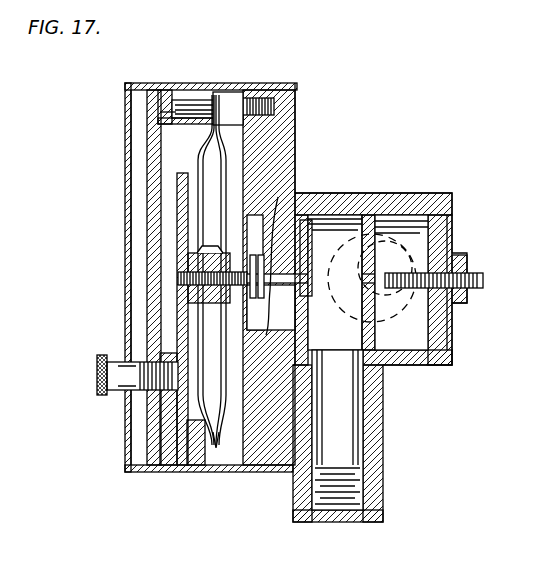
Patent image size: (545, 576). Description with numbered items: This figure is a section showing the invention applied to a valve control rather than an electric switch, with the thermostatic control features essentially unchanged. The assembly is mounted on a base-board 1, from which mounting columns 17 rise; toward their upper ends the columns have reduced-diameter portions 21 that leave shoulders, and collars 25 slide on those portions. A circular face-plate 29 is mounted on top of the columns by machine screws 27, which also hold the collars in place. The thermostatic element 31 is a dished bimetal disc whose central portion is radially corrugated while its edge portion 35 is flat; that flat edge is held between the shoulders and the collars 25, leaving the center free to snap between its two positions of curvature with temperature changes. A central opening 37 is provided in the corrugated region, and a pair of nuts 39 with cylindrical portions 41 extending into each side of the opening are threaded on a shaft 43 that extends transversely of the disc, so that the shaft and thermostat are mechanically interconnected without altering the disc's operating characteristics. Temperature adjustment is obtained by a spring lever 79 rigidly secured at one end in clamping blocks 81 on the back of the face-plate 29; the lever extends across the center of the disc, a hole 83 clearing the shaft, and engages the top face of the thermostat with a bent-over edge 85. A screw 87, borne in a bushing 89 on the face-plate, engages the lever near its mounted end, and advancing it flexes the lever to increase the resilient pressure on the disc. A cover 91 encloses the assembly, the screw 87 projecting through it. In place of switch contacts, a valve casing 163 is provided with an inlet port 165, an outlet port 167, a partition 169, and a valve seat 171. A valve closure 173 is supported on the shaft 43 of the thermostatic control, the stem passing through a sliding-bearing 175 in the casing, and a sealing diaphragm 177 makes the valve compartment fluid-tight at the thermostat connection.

The base-board 1 is at (290, 142).
The mounting columns 17 is at (224, 98).
The reduced-diameter portions 21 is at (190, 106).
The collars 25 is at (168, 90).
The machine screws 27 is at (160, 114).
The face-plate 29 is at (148, 170).
The thermostatic element 31 is at (289, 115).
The edge portion 35 is at (258, 100).
The central opening 37 is at (262, 305).
The nuts 39 is at (212, 262).
The cylindrical portions 41 is at (190, 305).
The shaft 43 is at (358, 290).
The spring lever 79 is at (177, 338).
The clamping blocks 81 is at (195, 460).
The hole 83 is at (186, 258).
The bent-over edge 85 is at (182, 175).
The screw 87 is at (115, 398).
The bushing 89 is at (135, 396).
The cover 91 is at (128, 195).
The valve casing 163 is at (380, 196).
The inlet port 165 is at (440, 270).
The outlet port 167 is at (338, 522).
The partition 169 is at (388, 366).
The valve seat 171 is at (384, 312).
The valve closure 173 is at (337, 418).
The sliding-bearing 175 is at (370, 232).
The sealing diaphragm 177 is at (366, 228).